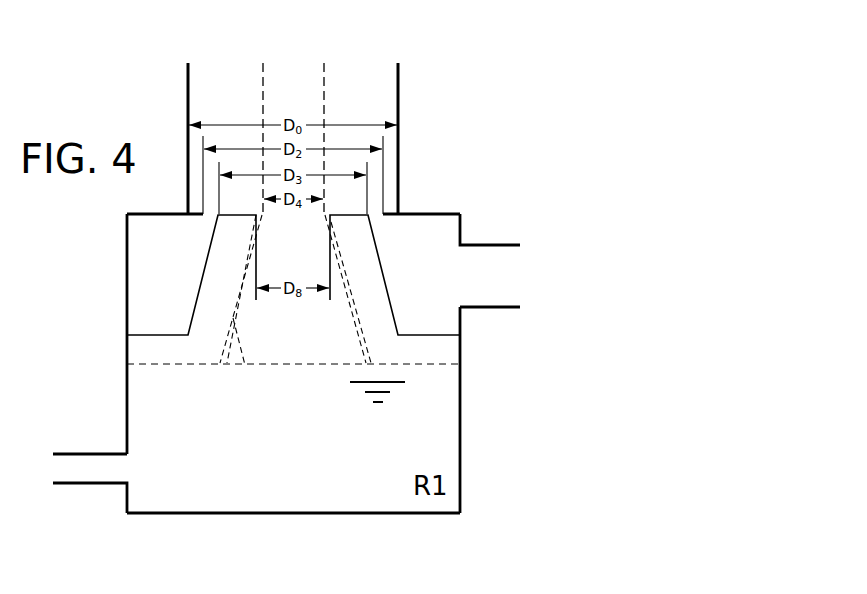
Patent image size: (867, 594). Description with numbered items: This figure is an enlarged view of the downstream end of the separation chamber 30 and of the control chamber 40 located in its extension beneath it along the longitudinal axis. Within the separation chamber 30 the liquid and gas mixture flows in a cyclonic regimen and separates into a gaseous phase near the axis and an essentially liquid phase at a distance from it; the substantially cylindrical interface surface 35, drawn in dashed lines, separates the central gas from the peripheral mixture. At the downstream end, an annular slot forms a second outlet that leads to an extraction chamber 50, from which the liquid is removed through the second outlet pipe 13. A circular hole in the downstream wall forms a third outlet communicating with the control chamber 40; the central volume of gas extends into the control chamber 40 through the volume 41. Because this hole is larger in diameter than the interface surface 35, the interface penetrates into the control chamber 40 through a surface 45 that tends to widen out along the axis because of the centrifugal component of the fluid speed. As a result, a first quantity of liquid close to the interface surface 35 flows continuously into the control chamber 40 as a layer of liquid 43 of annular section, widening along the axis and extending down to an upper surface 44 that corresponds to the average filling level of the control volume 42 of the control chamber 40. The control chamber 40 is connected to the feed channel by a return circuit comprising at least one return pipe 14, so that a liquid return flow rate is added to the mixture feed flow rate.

The second outlet pipe 13 is at (498, 245).
The return pipe 14 is at (82, 452).
The separation chamber 30 is at (363, 62).
The interface surface 35 is at (327, 107).
The control chamber 40 is at (422, 438).
The volume 41 is at (308, 346).
The control volume 42 is at (207, 483).
The layer of liquid 43 is at (223, 308).
The upper surface 44 is at (313, 366).
The surface 45 is at (245, 366).
The extraction chamber 50 is at (418, 243).